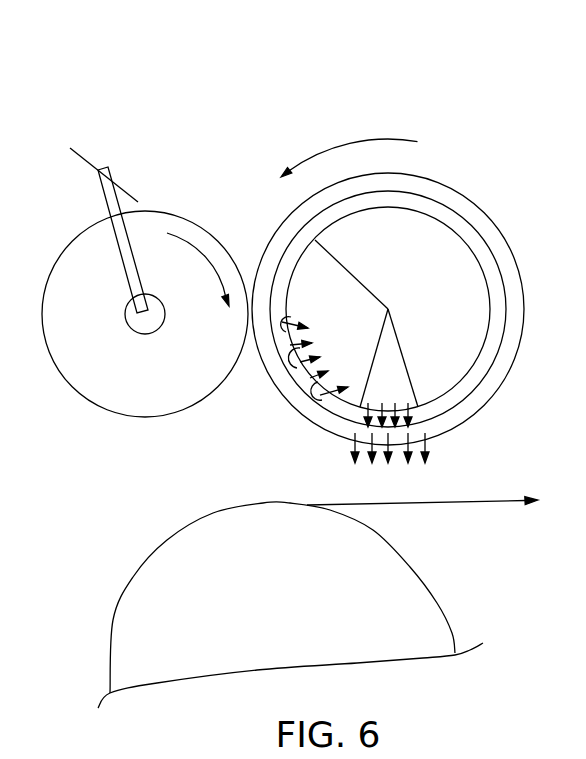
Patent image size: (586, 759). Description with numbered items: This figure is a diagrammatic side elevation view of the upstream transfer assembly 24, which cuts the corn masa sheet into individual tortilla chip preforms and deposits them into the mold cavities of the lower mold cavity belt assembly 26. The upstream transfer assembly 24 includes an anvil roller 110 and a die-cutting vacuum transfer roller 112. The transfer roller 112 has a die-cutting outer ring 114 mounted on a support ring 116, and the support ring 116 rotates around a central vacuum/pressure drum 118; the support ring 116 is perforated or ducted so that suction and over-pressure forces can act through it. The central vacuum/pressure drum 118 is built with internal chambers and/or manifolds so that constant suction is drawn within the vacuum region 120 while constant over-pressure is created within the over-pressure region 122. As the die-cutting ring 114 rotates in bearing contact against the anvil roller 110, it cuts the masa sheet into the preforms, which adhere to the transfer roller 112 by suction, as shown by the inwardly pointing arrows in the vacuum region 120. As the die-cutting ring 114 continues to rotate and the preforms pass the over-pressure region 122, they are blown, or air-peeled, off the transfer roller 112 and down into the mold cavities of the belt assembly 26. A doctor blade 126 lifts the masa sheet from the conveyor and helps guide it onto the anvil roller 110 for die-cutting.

The upstream transfer assembly 24 is at (278, 64).
The mold cavity belt assembly 26 is at (465, 503).
The anvil roller 110 is at (130, 392).
The die-cutting vacuum transfer roller 112 is at (408, 279).
The die-cutting outer ring 114 is at (482, 220).
The support ring 116 is at (485, 263).
The central vacuum/pressure drum 118 is at (478, 355).
The vacuum region 120 is at (338, 336).
The over-pressure region 122 is at (374, 388).
The doctor blade 126 is at (93, 162).